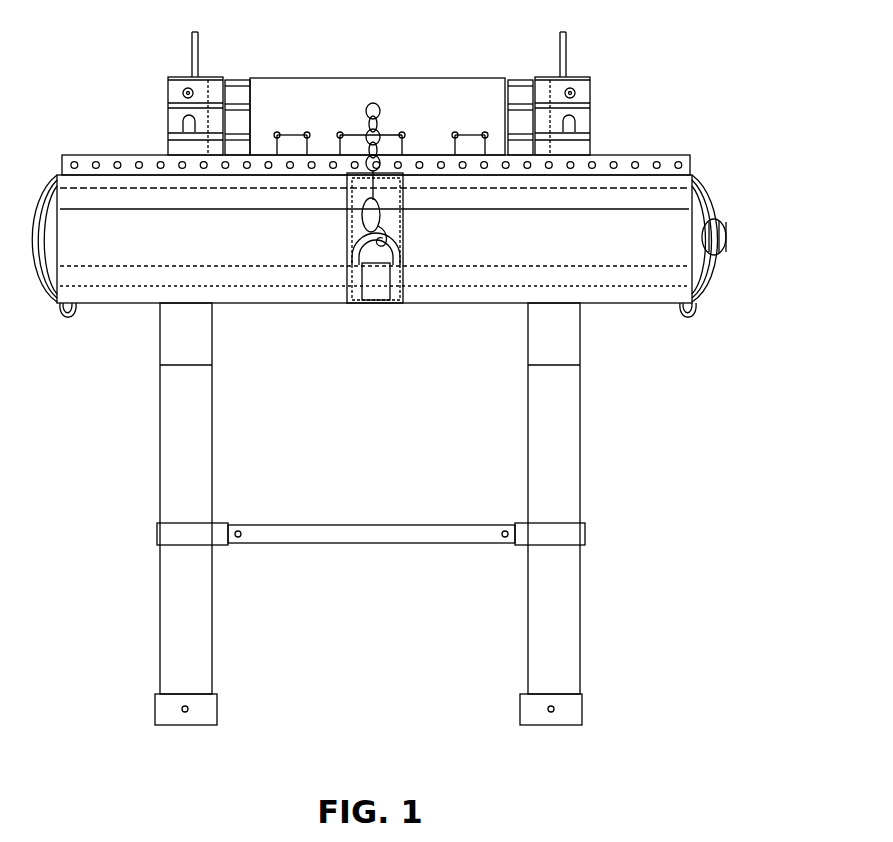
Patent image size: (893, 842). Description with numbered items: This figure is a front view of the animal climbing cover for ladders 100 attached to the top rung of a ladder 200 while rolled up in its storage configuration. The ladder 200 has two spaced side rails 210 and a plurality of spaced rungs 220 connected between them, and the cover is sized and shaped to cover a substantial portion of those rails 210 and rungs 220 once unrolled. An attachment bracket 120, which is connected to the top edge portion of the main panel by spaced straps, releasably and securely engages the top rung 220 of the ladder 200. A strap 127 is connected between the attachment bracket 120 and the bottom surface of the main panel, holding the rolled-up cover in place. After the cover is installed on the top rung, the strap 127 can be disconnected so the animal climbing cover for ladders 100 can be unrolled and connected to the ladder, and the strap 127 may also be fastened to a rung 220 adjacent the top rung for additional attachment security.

The animal climbing cover for ladders 100 is at (712, 183).
The attachment bracket 120 is at (389, 97).
The strap 127 is at (397, 305).
The ladder 200 is at (390, 514).
The side rails 210 is at (168, 348).
The rungs 220 is at (405, 543).